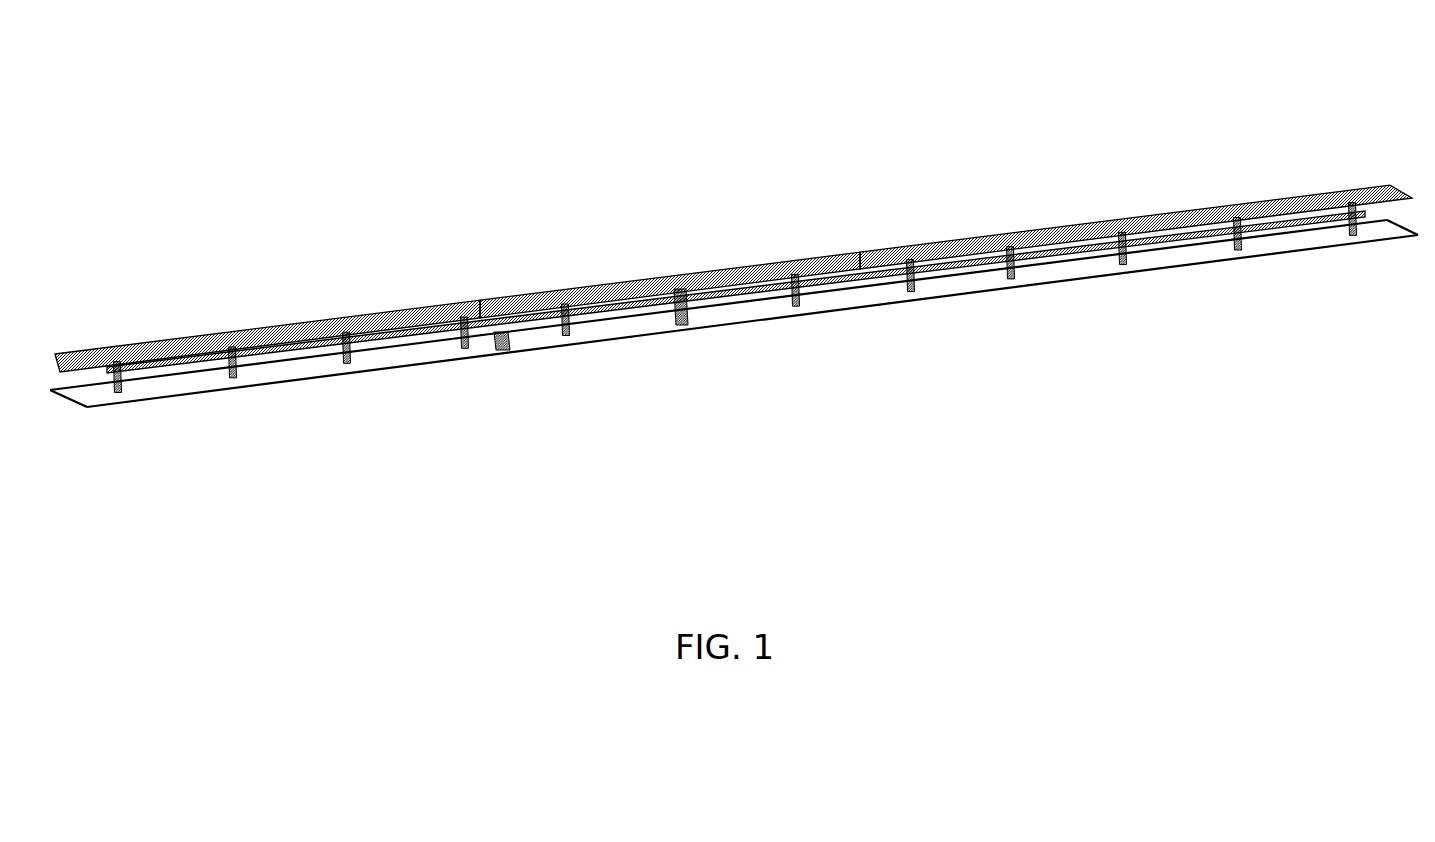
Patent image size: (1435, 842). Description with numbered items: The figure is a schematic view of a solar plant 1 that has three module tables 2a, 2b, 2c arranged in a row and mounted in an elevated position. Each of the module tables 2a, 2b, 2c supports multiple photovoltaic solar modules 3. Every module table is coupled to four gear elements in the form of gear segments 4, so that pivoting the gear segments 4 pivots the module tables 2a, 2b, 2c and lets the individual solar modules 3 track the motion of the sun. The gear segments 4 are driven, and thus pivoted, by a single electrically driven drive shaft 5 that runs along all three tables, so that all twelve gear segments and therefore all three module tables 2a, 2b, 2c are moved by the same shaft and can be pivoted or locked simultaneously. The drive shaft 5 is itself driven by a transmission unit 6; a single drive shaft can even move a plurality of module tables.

The solar plant 1 is at (734, 266).
The module table 2a is at (318, 318).
The module table 2b is at (647, 283).
The module table 2c is at (1068, 225).
The photovoltaic solar modules 3 is at (450, 305).
The gear segments 4 is at (212, 373).
The drive shaft 5 is at (502, 340).
The transmission unit 6 is at (688, 320).